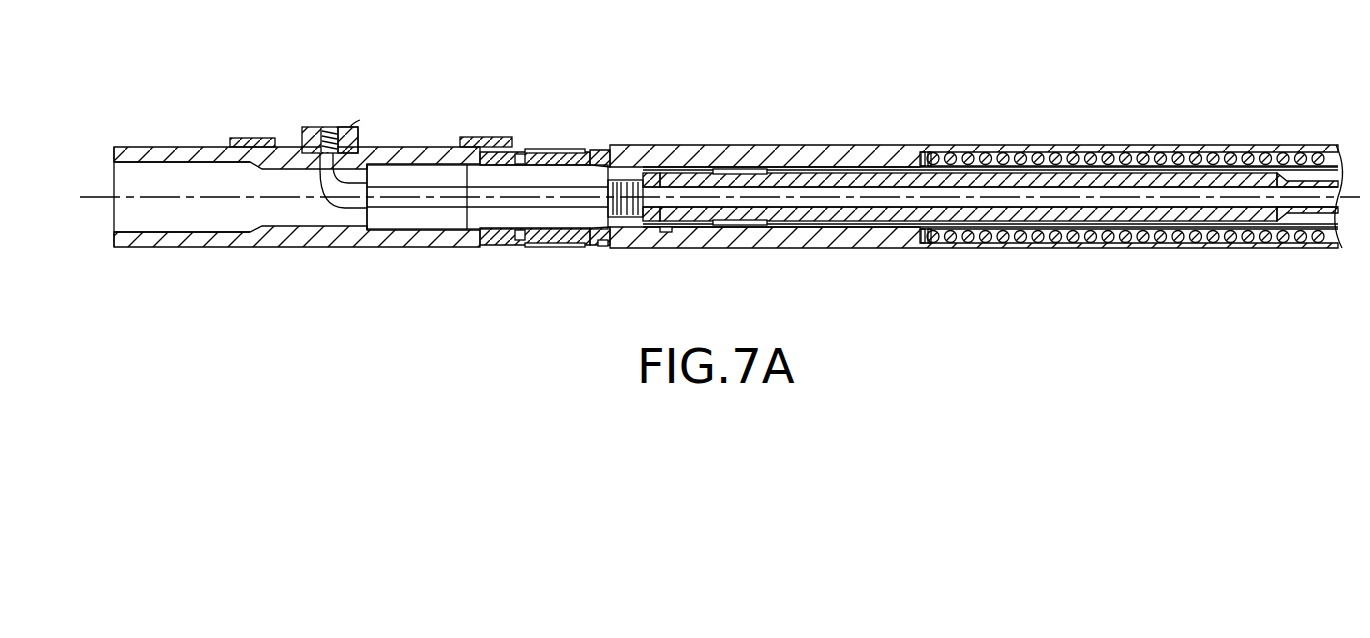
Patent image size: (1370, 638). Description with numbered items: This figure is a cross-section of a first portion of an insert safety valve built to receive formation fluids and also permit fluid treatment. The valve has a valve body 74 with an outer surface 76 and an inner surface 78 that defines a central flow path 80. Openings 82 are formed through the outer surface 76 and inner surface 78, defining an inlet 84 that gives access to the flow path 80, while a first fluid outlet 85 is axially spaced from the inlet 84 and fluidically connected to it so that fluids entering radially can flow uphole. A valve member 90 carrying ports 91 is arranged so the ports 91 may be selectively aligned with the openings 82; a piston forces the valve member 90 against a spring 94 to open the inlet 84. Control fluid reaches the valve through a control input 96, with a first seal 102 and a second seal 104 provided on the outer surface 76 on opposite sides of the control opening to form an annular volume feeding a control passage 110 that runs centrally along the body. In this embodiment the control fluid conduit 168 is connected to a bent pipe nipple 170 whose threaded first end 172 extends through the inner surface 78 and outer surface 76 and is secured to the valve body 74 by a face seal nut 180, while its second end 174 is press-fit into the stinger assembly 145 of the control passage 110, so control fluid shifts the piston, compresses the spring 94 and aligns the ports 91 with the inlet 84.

The valve body 74 is at (295, 245).
The outer surface 76 is at (195, 248).
The inner surface 78 is at (135, 160).
The flow path 80 is at (225, 232).
The openings 82 is at (625, 124).
The inlet 84 is at (603, 148).
The first fluid outlet 85 is at (133, 217).
The valve member 90 is at (884, 227).
The ports 91 is at (667, 232).
The spring 94 is at (1170, 240).
The control input 96 is at (318, 108).
The first seal 102 is at (250, 138).
The second seal 104 is at (488, 137).
The control passage 110 is at (990, 215).
The stinger assembly 145 is at (648, 180).
The control fluid conduit 168 is at (1010, 316).
The bent pipe nipple 170 is at (447, 242).
The first end 172 is at (358, 118).
The second end 174 is at (603, 247).
The face seal nut 180 is at (344, 108).